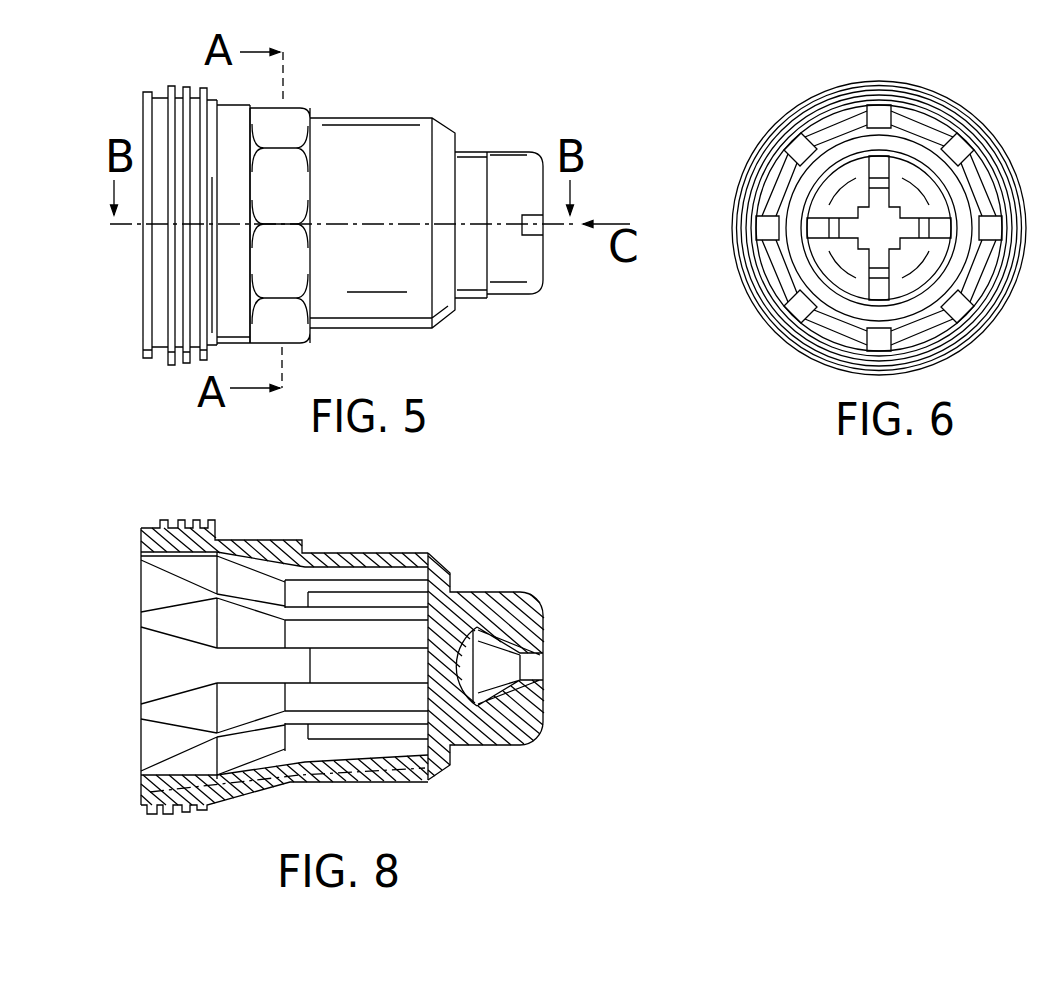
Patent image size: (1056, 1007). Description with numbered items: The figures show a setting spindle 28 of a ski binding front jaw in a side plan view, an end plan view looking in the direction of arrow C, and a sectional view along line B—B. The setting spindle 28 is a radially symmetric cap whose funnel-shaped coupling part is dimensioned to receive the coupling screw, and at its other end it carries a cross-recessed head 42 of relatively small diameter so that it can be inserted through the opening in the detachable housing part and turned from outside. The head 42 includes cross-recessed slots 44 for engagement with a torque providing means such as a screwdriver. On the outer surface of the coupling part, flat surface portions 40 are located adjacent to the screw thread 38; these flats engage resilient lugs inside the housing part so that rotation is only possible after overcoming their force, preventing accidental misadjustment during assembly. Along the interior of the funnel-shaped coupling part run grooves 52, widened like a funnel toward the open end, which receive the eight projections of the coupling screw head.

In FIG. 5, the setting spindle 28 is at (403, 115).
In FIG. 6, the setting spindle 28 is at (782, 253).
In FIG. 8, the setting spindle 28 is at (398, 548).
In FIG. 5, the screw thread 38 is at (178, 367).
In FIG. 6, the screw thread 38 is at (935, 93).
In FIG. 8, the screw thread 38 is at (188, 803).
In FIG. 5, the flat surface portions 40 is at (292, 328).
In FIG. 6, the flat surface portions 40 is at (933, 322).
In FIG. 8, the flat surface portions 40 is at (232, 790).
In FIG. 5, the cross-recessed head 42 is at (520, 292).
In FIG. 6, the cross-recessed head 42 is at (848, 267).
In FIG. 8, the cross-recessed head 42 is at (508, 592).
In FIG. 5, the cross-recessed slots 44 is at (533, 218).
In FIG. 6, the cross-recessed slots 44 is at (875, 195).
In FIG. 8, the cross-recessed slots 44 is at (538, 663).
In FIG. 5, the grooves 52 is at (17, 131).
In FIG. 8, the grooves 52 is at (162, 586).